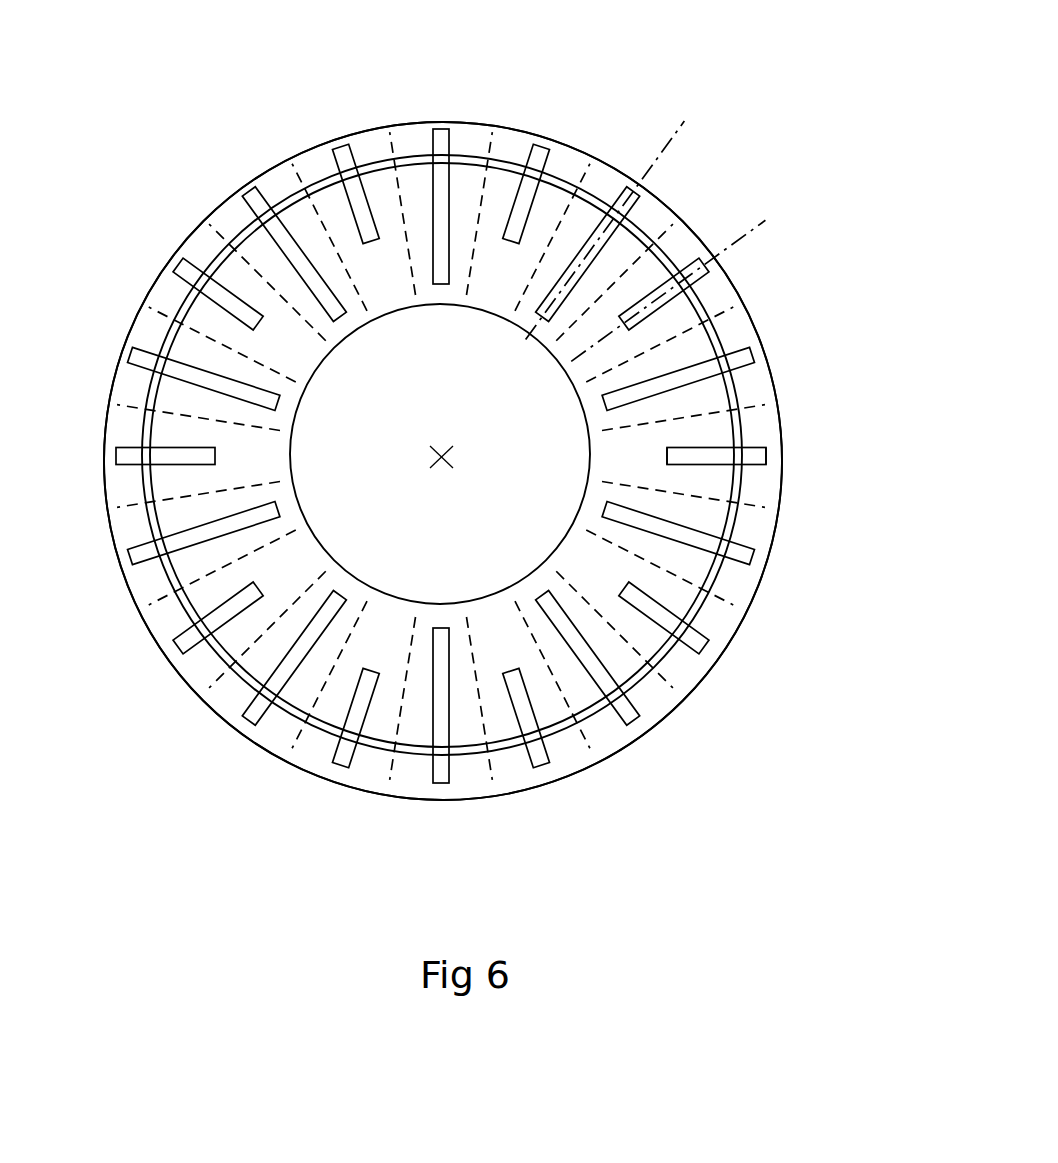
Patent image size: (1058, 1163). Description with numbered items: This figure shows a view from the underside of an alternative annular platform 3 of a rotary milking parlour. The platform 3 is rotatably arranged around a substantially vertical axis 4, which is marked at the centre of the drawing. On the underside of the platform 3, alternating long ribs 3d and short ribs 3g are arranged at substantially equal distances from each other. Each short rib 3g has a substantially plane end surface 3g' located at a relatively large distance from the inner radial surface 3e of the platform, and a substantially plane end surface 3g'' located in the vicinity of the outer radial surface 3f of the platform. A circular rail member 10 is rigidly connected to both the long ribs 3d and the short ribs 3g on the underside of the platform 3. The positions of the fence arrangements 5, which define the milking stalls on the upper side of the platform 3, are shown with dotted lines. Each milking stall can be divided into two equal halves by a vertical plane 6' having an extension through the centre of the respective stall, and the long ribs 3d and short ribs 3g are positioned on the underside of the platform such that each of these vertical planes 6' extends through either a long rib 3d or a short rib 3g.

The annular platform 3 is at (330, 143).
The long ribs 3d is at (748, 358).
The inner radial surface 3e is at (533, 580).
The outer radial surface 3f is at (758, 587).
The short ribs 3g is at (515, 455).
The plane end surface 3g' is at (587, 454).
The plane end surface 3g'' is at (857, 484).
The vertical axis 4 is at (442, 456).
The fence arrangements 5 is at (562, 205).
The vertical planes 6' is at (681, 226).
The circular rail member 10 is at (185, 300).